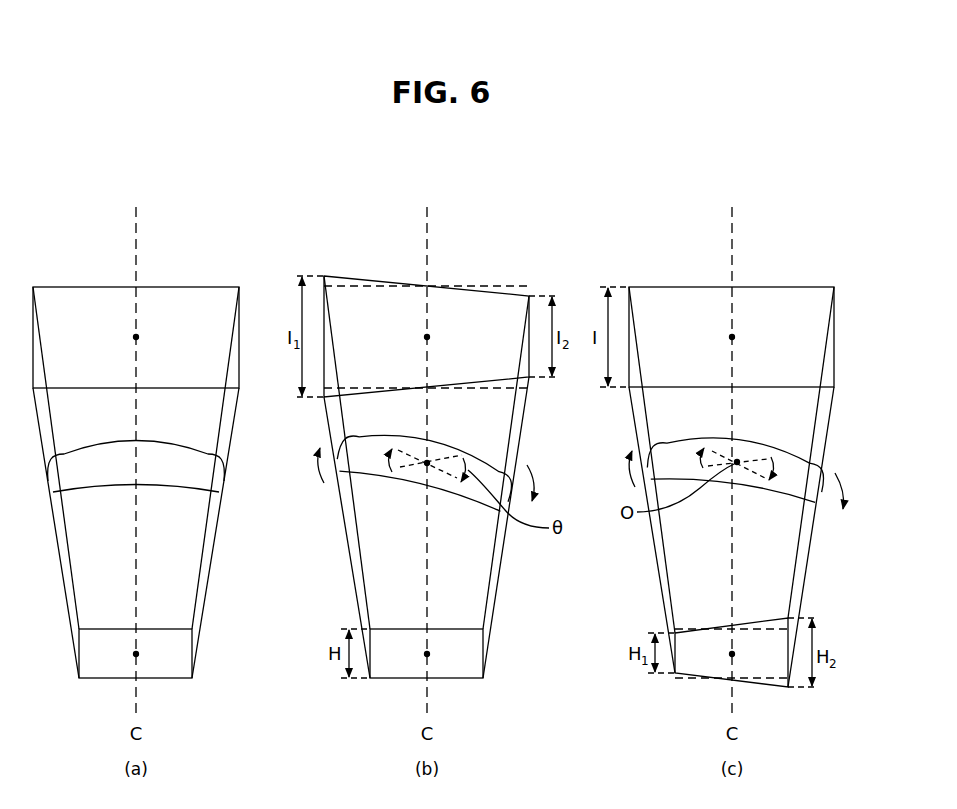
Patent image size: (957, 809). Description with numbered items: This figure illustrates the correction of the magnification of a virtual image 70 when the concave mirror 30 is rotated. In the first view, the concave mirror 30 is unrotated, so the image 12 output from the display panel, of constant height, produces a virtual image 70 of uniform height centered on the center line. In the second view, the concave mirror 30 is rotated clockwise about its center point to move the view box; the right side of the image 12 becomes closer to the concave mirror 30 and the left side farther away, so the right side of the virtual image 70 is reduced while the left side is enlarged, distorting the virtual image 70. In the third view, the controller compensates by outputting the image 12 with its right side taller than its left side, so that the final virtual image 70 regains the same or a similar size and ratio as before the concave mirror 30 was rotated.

The virtual image 70 is at (214, 293).
The concave mirror 30 is at (188, 456).
The image 12 is at (172, 663).